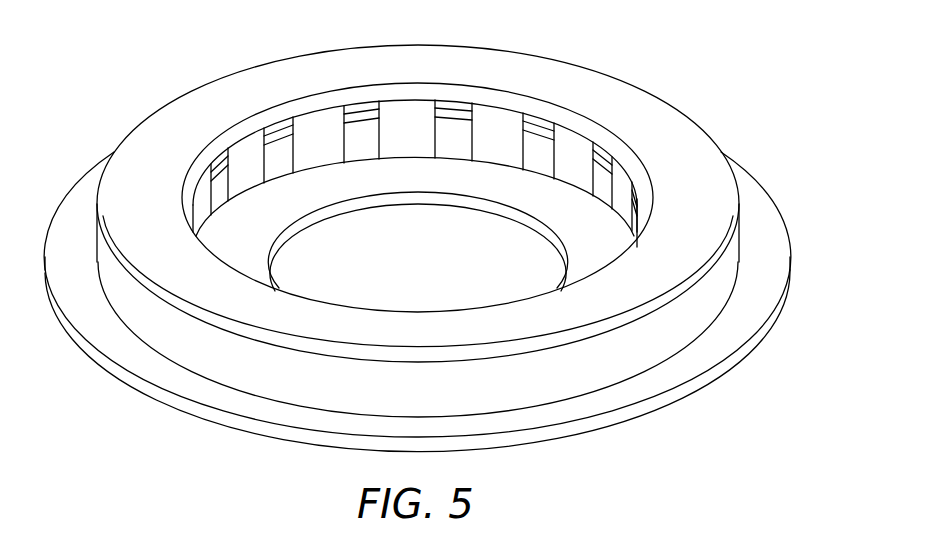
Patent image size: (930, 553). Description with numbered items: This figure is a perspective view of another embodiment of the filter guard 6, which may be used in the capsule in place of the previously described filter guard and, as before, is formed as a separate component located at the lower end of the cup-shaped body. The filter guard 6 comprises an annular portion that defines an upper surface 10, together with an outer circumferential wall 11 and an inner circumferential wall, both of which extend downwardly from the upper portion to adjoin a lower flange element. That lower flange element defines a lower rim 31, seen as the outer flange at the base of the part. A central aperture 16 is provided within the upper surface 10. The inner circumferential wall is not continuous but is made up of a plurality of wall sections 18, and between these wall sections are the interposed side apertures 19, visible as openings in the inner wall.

The filter guard 6 is at (429, 233).
The upper surface 10 is at (541, 72).
The outer circumferential wall 11 is at (747, 243).
The central aperture 16 is at (434, 266).
The wall sections 18 is at (238, 170).
The side apertures 19 is at (452, 128).
The lower rim 31 is at (693, 384).